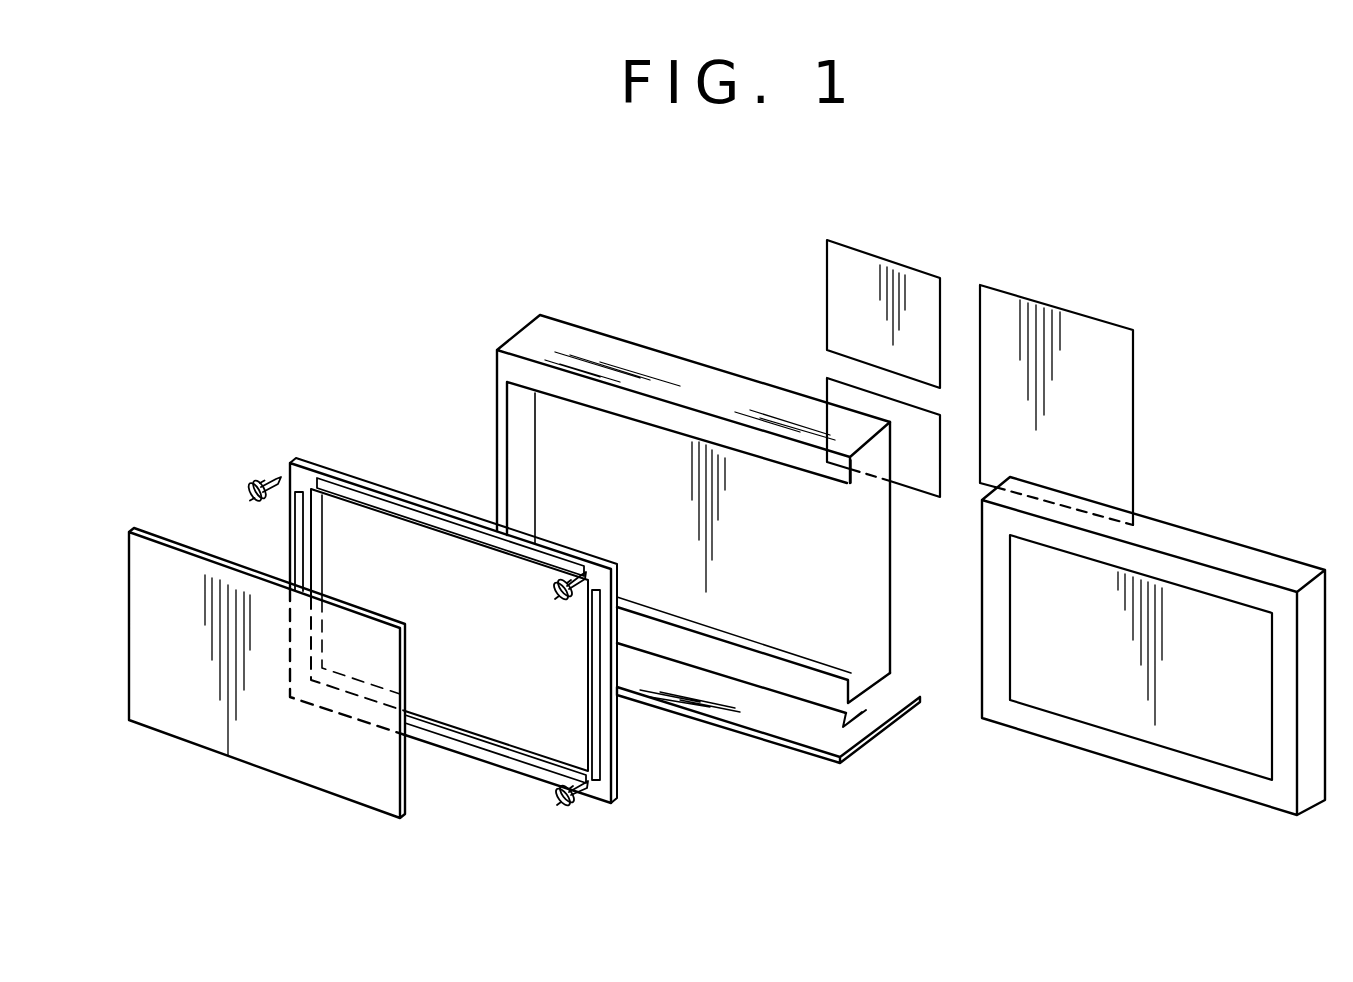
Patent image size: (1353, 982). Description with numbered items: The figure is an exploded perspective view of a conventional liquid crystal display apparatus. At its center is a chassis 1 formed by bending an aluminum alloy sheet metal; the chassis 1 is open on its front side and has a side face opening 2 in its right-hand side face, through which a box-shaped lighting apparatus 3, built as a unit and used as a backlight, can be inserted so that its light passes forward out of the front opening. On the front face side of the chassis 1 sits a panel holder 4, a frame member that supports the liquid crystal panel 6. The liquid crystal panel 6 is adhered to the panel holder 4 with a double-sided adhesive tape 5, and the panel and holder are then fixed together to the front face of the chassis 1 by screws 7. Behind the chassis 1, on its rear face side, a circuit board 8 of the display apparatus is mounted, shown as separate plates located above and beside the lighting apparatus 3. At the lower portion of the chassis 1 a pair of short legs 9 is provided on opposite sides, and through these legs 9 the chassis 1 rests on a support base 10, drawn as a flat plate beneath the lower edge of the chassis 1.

The chassis 1 is at (612, 348).
The side face opening 2 is at (875, 585).
The lighting apparatus 3 is at (1120, 786).
The panel holder 4 is at (352, 470).
The double-sided adhesive tape 5 is at (297, 523).
The liquid crystal panel 6 is at (232, 757).
The screws 7 is at (257, 480).
The circuit board 8 is at (840, 305).
The short legs 9 is at (870, 707).
The support base 10 is at (798, 730).